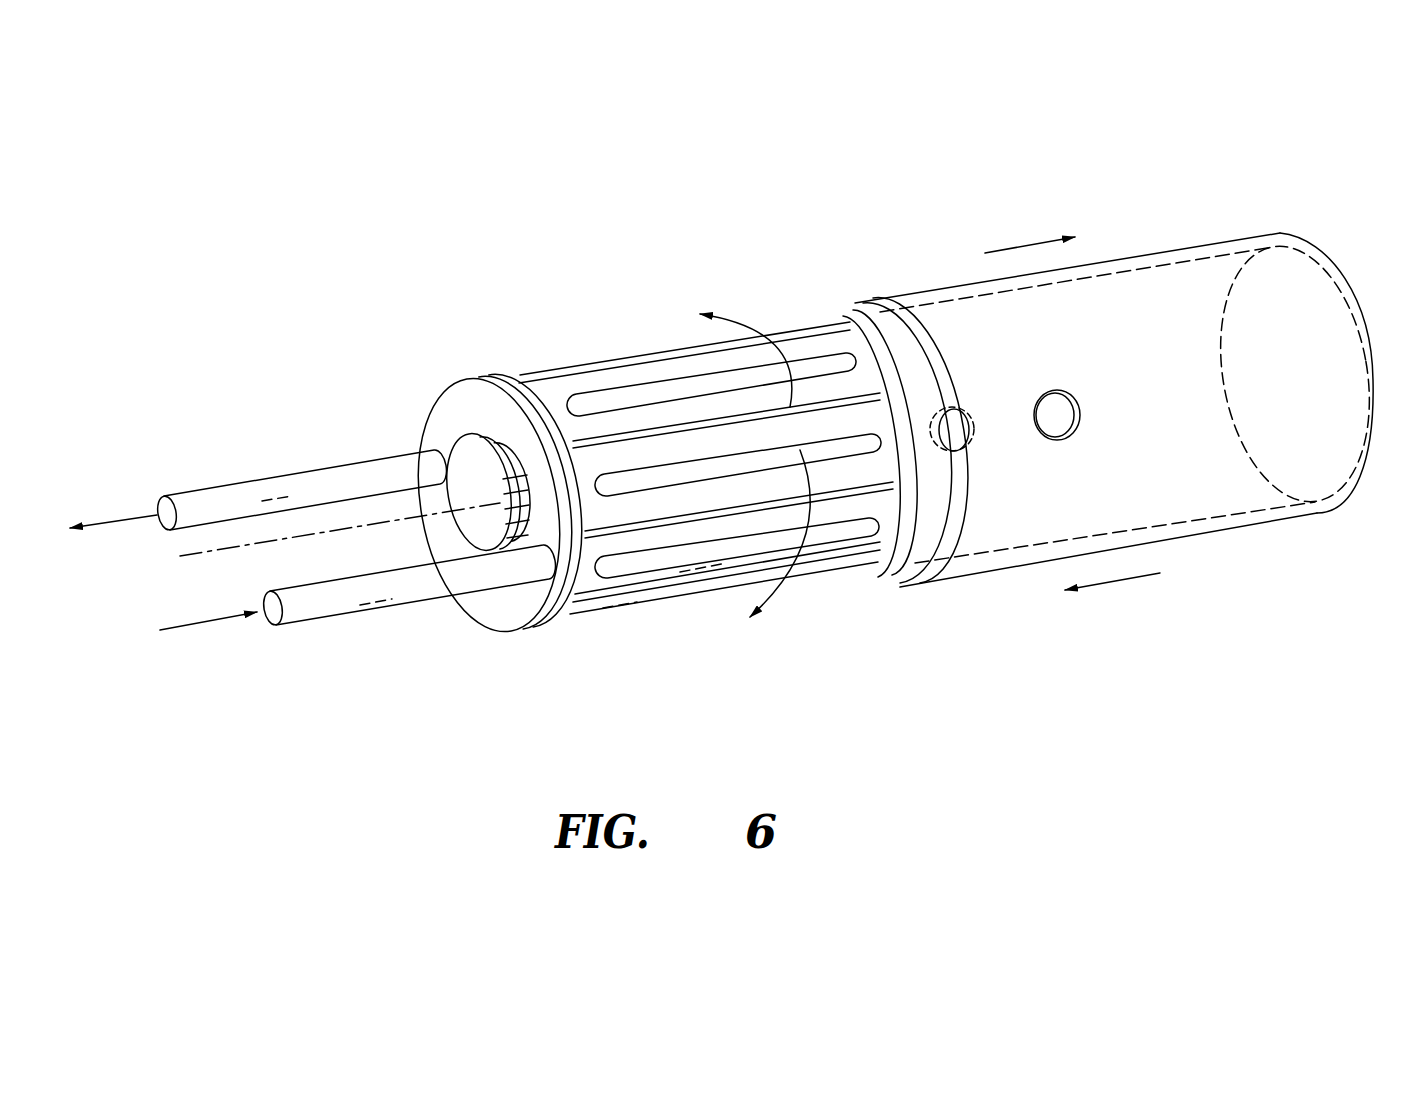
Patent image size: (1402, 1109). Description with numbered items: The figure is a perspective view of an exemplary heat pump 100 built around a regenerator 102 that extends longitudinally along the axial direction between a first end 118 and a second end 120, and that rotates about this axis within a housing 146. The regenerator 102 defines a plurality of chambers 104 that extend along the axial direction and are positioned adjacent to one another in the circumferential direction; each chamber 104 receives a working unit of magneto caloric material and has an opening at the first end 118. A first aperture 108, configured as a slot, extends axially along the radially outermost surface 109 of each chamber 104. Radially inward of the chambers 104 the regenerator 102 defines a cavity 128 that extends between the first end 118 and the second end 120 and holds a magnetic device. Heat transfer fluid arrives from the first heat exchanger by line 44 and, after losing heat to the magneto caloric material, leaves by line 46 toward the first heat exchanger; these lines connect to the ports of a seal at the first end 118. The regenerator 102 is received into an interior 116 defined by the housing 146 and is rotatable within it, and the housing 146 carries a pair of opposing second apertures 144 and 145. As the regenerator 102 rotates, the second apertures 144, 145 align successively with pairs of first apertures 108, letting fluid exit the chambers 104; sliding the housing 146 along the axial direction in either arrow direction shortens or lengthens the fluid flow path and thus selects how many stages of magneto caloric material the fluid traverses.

The heat pump 100 is at (362, 398).
The first end 118 is at (484, 366).
The chambers 104 is at (546, 388).
The first aperture 108 is at (613, 392).
The radially outermost surface 109 is at (860, 380).
The second aperture 144 is at (963, 400).
The interior 116 is at (1142, 298).
The housing 146 is at (1233, 237).
The line 46 is at (287, 495).
The cavity 128 is at (473, 527).
The line 44 is at (313, 600).
The regenerator 102 is at (562, 617).
The second end 120 is at (850, 598).
The second aperture 145 is at (1037, 433).